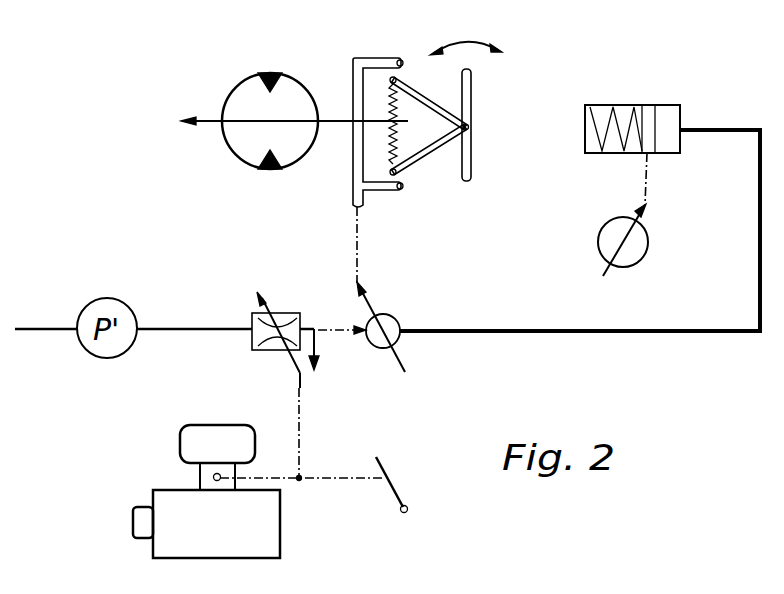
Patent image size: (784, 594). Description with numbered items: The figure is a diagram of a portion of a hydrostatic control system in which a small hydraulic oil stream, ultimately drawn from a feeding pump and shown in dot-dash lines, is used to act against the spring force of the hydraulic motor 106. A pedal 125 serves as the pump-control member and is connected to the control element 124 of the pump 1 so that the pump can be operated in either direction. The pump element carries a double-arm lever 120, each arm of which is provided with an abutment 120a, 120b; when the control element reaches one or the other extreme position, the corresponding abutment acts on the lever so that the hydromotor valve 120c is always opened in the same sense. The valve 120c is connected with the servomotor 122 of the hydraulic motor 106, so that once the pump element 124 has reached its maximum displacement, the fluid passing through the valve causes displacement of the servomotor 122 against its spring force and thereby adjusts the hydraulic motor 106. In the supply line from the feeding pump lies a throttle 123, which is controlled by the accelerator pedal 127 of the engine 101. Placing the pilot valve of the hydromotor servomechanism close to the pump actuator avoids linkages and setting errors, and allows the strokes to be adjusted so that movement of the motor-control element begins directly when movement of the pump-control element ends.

The pump 1 is at (243, 86).
The double-arm lever 120 is at (353, 66).
The abutment 120a is at (400, 57).
The abutment 120b is at (398, 190).
The valve 120c is at (393, 316).
The servomotor 122 is at (668, 105).
The throttle 123 is at (288, 313).
The control element 124 is at (333, 125).
The pedal 125 is at (471, 163).
The hydraulic motor 106 is at (640, 257).
The engine 101 is at (278, 523).
The accelerator pedal 127 is at (402, 456).